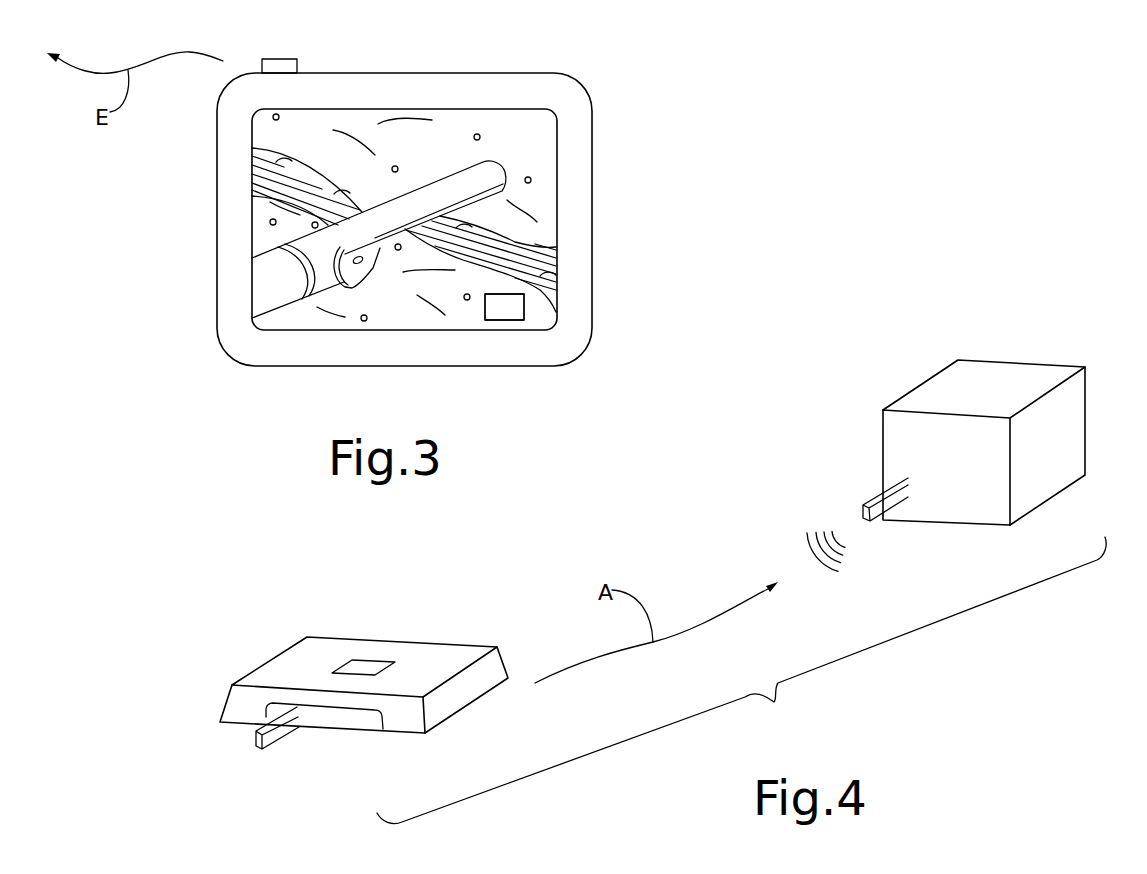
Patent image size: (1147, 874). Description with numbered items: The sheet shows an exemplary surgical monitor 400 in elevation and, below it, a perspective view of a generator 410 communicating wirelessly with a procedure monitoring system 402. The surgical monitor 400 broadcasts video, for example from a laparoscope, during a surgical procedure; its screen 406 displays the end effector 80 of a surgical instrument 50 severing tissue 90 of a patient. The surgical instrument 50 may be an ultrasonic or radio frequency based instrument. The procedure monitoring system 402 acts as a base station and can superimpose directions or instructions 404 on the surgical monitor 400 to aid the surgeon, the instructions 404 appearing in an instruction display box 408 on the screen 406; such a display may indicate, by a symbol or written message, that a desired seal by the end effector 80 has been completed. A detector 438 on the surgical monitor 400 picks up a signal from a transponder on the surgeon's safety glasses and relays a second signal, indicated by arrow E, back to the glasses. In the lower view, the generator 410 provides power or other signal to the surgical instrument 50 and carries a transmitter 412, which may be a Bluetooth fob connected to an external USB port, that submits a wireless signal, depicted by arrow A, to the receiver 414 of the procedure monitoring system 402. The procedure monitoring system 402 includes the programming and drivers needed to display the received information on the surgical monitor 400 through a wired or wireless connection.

In FIG. 3, the surgical monitor 400 is at (599, 101).
In FIG. 3, the detector 438 is at (283, 58).
In FIG. 3, the screen 406 is at (546, 187).
In FIG. 3, the tissue 90 is at (533, 251).
In FIG. 3, the surgical instrument 50 is at (263, 252).
In FIG. 3, the end effector 80 is at (440, 165).
In FIG. 3, the instruction display box 408 is at (542, 317).
In FIG. 3, the instructions 404 is at (504, 312).
In FIG. 4, the procedure monitoring system 402 is at (918, 346).
In FIG. 4, the receiver 414 is at (905, 524).
In FIG. 4, the generator 410 is at (348, 601).
In FIG. 4, the transmitter 412 is at (234, 740).